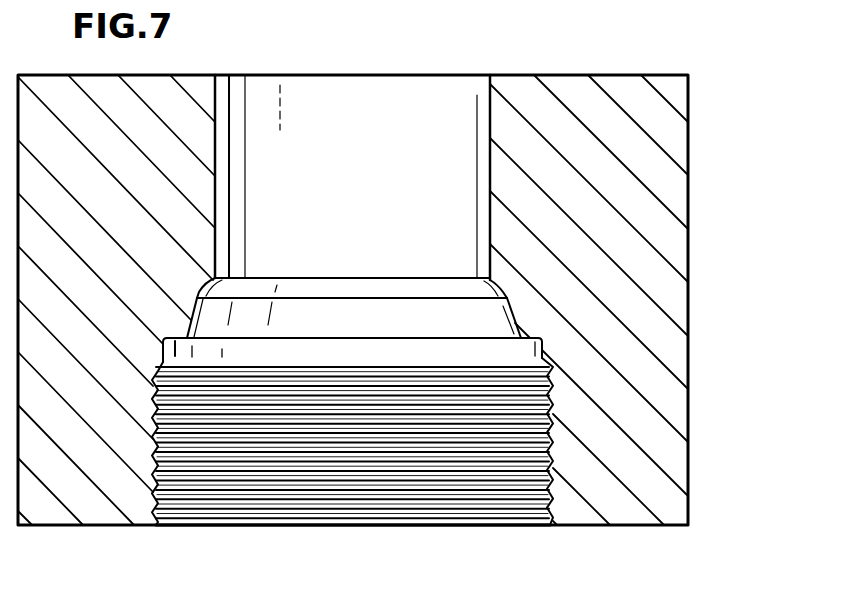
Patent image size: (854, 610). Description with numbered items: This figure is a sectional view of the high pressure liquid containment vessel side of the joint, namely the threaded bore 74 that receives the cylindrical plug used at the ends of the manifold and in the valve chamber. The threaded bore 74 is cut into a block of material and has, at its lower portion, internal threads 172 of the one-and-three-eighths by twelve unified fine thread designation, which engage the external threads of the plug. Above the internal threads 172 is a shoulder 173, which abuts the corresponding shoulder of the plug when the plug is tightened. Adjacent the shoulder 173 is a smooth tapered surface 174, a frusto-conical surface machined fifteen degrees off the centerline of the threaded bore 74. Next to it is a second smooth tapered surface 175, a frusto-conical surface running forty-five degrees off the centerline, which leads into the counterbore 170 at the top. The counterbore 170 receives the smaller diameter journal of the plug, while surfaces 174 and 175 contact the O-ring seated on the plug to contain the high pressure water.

The counterbore 170 is at (486, 96).
The smooth tapered surface 175 is at (483, 284).
The smooth tapered surface 174 is at (501, 307).
The shoulder 173 is at (530, 343).
The internal threads 172 is at (550, 530).
The threaded bore 74 is at (316, 524).